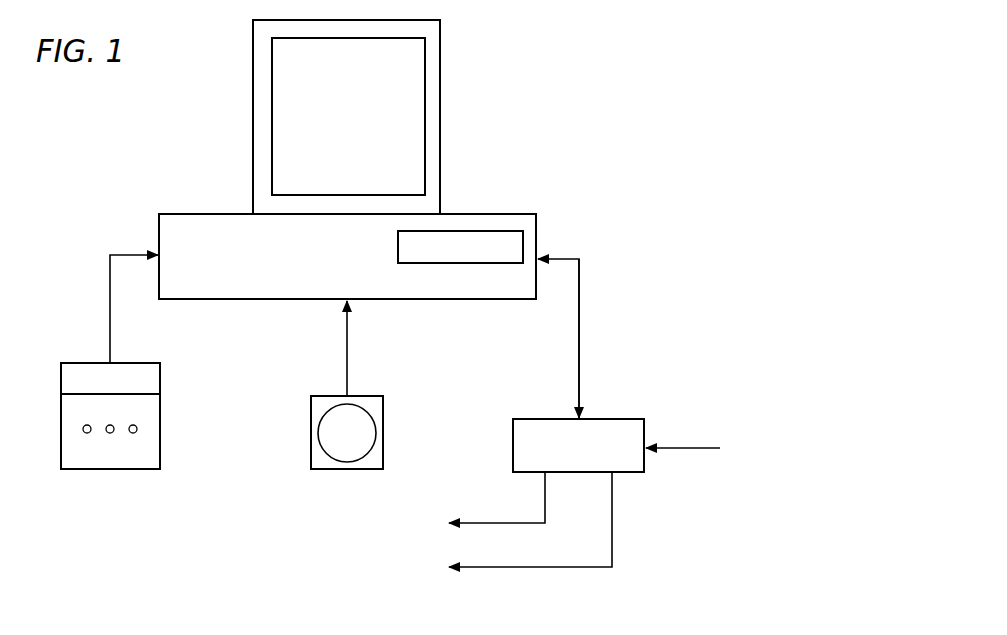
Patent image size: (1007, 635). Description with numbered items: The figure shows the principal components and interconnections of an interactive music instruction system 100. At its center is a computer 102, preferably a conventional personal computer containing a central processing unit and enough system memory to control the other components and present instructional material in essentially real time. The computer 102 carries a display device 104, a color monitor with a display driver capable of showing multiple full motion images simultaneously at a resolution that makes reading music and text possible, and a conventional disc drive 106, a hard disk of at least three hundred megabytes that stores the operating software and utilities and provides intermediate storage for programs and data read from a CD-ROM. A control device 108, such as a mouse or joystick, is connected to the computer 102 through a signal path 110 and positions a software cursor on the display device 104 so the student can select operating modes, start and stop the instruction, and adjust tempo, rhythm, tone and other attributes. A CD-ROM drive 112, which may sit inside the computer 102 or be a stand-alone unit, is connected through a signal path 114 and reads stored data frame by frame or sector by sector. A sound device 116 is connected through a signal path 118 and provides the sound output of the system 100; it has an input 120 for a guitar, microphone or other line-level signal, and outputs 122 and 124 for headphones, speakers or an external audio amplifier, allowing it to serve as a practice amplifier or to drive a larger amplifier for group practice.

The music instruction system 100 is at (128, 502).
The computer 102 is at (183, 213).
The display device 104 is at (441, 68).
The disc drive 106 is at (486, 216).
The control device 108 is at (160, 403).
The signal path 110 is at (108, 279).
The CD-ROM drive 112 is at (311, 447).
The signal path 114 is at (348, 357).
The sound device 116 is at (522, 418).
The signal path 118 is at (548, 290).
The input 120 is at (673, 446).
The output 122 is at (516, 495).
The output 124 is at (515, 568).